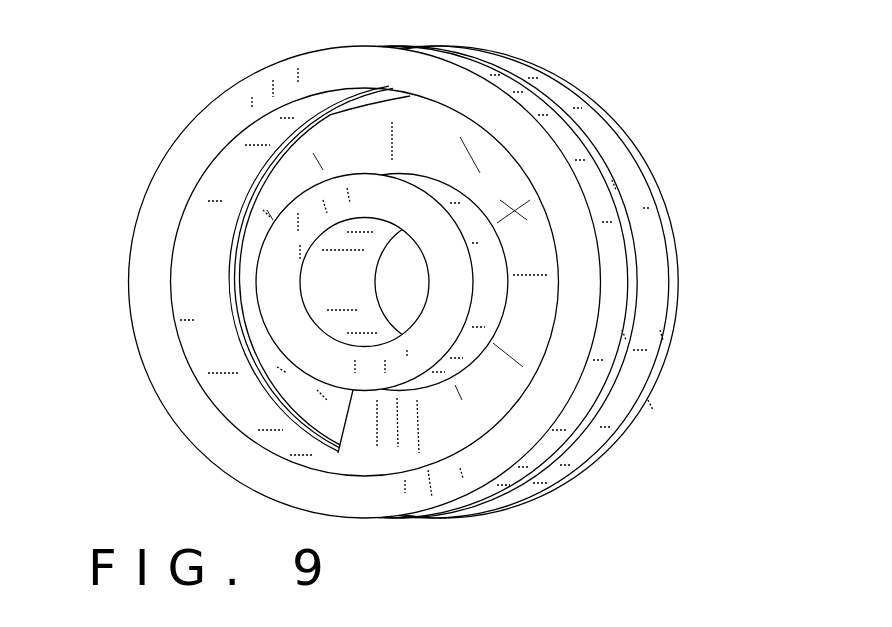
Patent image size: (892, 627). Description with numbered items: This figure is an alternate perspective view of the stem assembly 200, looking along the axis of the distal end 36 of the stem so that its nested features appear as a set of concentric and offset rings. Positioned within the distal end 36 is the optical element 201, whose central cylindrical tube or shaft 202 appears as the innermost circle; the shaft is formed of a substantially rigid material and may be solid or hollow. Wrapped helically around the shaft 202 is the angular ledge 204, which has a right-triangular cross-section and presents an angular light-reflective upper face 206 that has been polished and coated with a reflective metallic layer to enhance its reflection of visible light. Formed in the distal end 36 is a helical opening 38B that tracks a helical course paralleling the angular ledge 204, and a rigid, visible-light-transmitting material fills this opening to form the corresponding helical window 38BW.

The stem assembly 200 is at (726, 252).
The optical element 201 is at (468, 134).
The central cylindrical tube or shaft 202 is at (360, 197).
The angular ledge 204 is at (320, 410).
The angular light-reflective upper face 206 is at (456, 404).
The distal end 36 is at (592, 187).
The helical opening 38B is at (232, 277).
The helical window 38BW is at (632, 293).